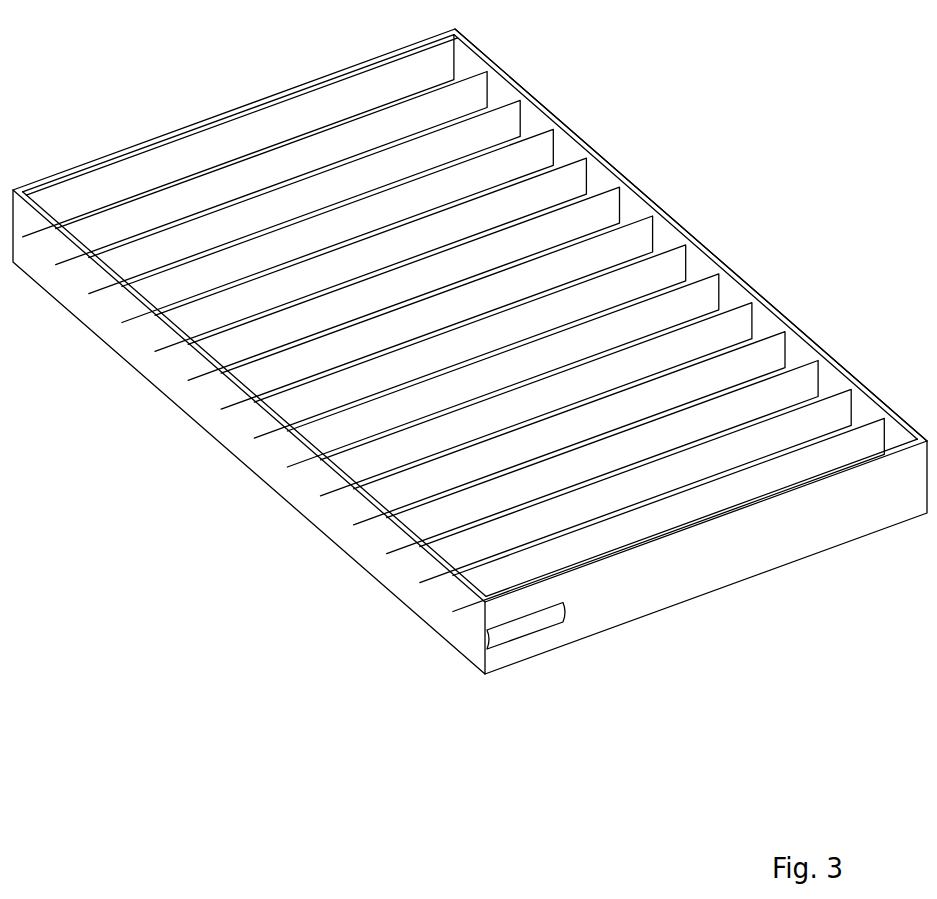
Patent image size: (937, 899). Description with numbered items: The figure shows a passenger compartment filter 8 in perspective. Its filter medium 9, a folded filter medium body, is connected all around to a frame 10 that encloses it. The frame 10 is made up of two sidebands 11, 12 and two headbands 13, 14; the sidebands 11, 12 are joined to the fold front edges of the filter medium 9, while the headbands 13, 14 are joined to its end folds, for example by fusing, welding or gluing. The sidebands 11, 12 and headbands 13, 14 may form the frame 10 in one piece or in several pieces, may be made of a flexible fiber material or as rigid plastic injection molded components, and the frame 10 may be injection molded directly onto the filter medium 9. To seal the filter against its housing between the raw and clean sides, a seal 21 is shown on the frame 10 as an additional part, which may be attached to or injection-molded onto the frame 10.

The passenger compartment filter 8 is at (748, 115).
The filter medium 9 is at (578, 177).
The frame 10 is at (682, 223).
The sideband 11 is at (318, 507).
The sideband 12 is at (749, 281).
The headband 13 is at (711, 577).
The headband 14 is at (233, 109).
The seal 21 is at (535, 625).